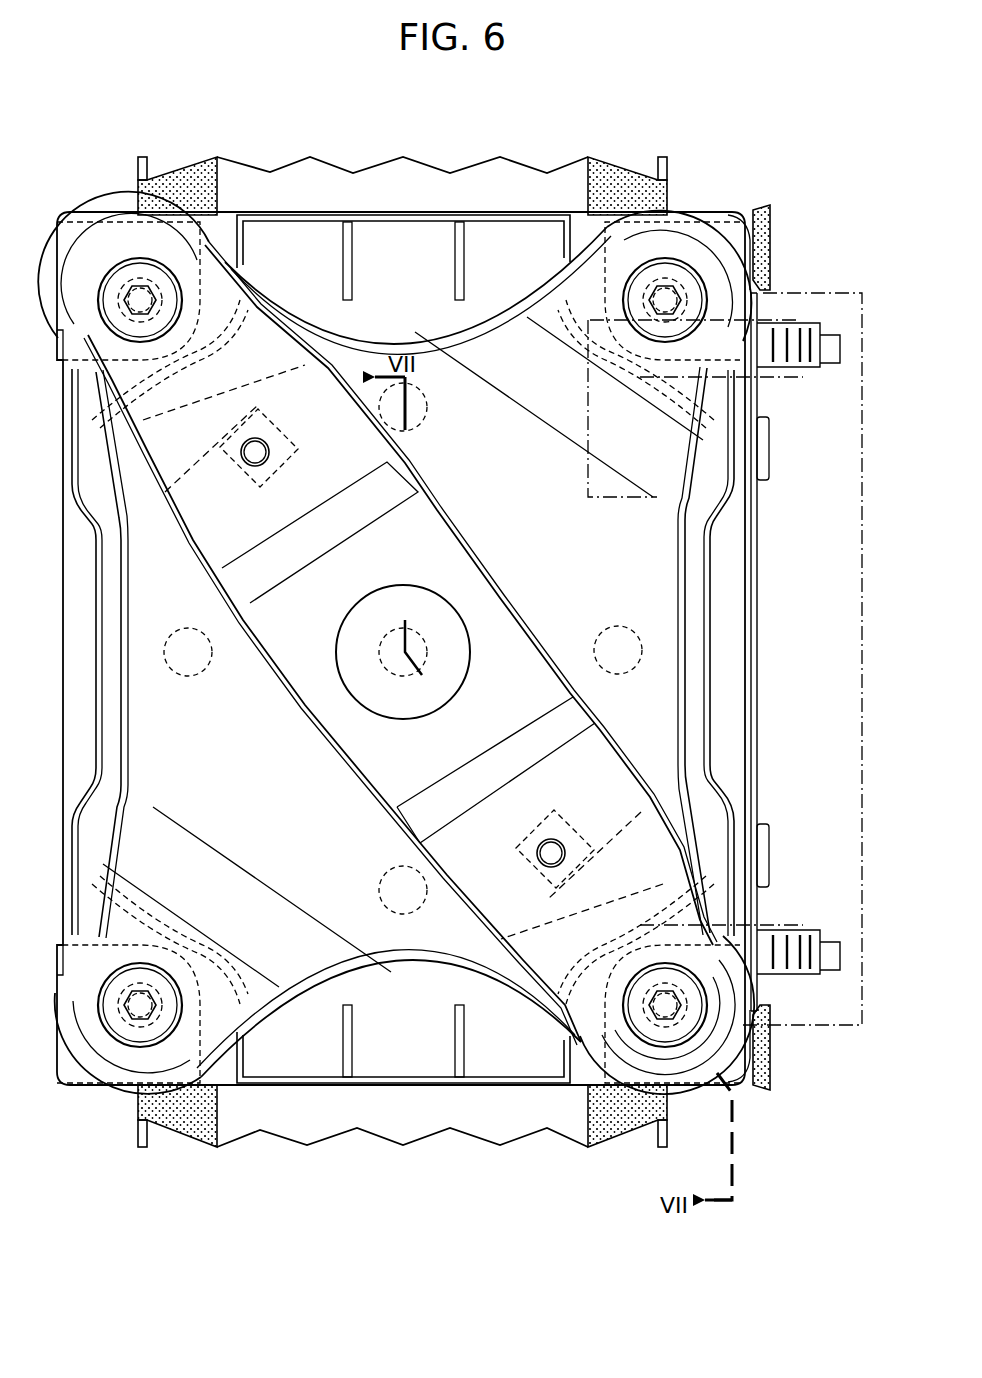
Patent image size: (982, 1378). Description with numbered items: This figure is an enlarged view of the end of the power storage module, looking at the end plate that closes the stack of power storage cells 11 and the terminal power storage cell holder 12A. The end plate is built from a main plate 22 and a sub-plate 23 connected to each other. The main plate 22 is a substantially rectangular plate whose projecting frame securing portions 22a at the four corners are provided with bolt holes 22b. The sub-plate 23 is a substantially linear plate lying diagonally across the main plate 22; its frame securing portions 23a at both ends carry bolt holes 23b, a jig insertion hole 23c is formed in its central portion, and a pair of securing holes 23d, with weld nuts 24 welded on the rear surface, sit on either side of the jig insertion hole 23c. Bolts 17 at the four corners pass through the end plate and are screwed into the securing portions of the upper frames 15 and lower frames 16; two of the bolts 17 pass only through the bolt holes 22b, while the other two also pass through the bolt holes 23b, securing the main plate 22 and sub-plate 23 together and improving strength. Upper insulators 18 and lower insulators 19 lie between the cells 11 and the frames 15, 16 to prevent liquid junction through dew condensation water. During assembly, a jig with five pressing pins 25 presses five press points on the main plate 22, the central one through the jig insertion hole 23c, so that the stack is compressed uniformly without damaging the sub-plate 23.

The power storage cell 11 is at (780, 455).
The terminal power storage cell holder 12A is at (527, 160).
The upper frame 15 is at (738, 218).
The lower frame 16 is at (70, 212).
The bolt 17 is at (140, 270).
The upper insulator 18 is at (770, 215).
The lower insulator 19 is at (138, 190).
The main plate 22 is at (446, 658).
The frame securing portion 22a is at (192, 222).
The bolt hole 22b is at (600, 380).
The sub-plate 23 is at (441, 649).
The frame securing portion 23a is at (212, 248).
The bolt hole 23b is at (290, 310).
The jig insertion hole 23c is at (460, 670).
The securing hole 23d is at (257, 440).
The weld nut 24 is at (240, 485).
The pressing pin 25 is at (428, 407).